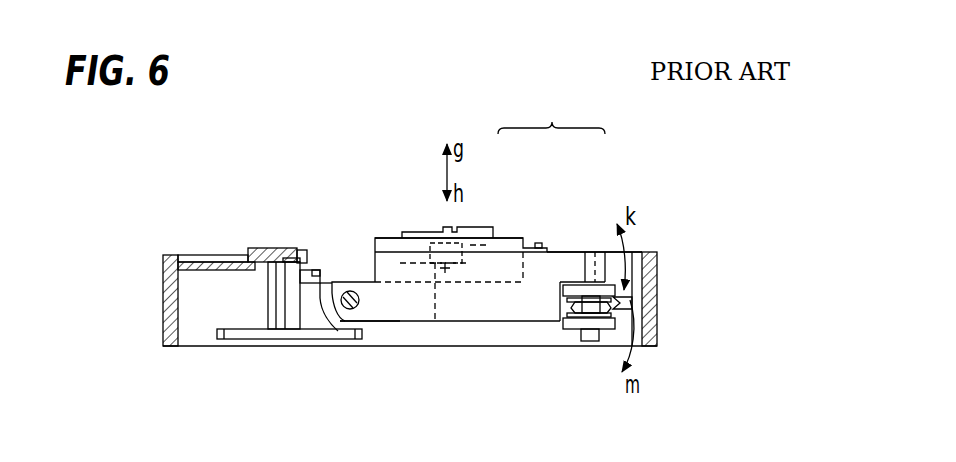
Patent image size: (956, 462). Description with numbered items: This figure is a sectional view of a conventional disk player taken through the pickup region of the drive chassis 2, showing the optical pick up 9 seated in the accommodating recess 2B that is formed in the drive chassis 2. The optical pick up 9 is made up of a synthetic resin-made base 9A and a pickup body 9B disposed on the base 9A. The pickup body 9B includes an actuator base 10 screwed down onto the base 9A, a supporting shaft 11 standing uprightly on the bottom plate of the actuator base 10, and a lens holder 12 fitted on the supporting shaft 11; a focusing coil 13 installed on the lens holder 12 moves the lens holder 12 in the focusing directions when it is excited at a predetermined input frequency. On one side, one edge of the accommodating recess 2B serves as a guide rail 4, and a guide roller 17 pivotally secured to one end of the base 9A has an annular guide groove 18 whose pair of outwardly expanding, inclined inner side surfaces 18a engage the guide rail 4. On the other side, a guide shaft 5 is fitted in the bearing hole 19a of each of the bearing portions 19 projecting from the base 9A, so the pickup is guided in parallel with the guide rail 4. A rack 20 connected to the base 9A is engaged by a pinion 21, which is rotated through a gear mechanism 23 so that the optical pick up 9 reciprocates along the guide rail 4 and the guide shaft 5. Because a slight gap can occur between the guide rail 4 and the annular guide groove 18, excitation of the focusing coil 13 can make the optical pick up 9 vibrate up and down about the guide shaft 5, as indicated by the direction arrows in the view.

The drive chassis 2 is at (203, 255).
The accommodating recess 2B is at (487, 335).
The guide rail 4 is at (618, 309).
The guide shaft 5 is at (377, 322).
The optical pick up 9 is at (551, 109).
The base 9A is at (563, 251).
The pickup body 9B is at (510, 237).
The actuator base 10 is at (380, 238).
The supporting shaft 11 is at (435, 321).
The lens holder 12 is at (415, 232).
The focusing coil 13 is at (466, 284).
The guide roller 17 is at (565, 327).
The annular guide groove 18 is at (627, 300).
The inclined inner side surfaces 18a is at (575, 311).
The bearing portions 19 is at (335, 331).
The bearing hole 19a is at (359, 302).
The rack 20 is at (323, 270).
The pinion 21 is at (270, 295).
The gear mechanism 23 is at (242, 339).